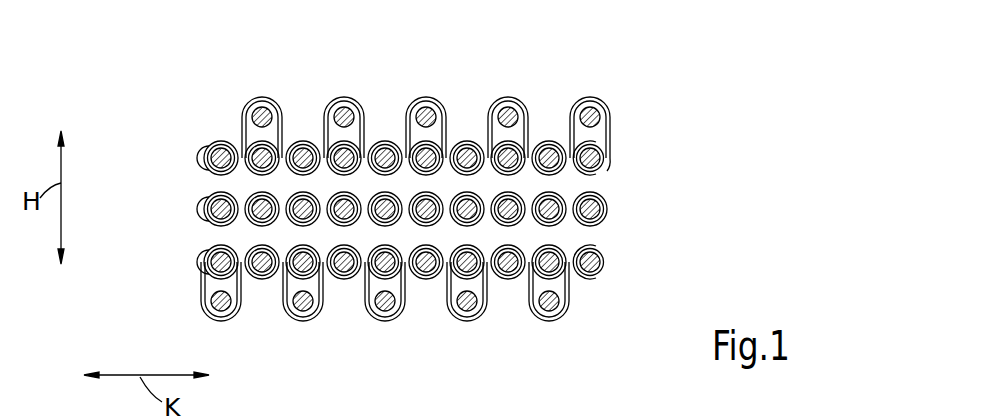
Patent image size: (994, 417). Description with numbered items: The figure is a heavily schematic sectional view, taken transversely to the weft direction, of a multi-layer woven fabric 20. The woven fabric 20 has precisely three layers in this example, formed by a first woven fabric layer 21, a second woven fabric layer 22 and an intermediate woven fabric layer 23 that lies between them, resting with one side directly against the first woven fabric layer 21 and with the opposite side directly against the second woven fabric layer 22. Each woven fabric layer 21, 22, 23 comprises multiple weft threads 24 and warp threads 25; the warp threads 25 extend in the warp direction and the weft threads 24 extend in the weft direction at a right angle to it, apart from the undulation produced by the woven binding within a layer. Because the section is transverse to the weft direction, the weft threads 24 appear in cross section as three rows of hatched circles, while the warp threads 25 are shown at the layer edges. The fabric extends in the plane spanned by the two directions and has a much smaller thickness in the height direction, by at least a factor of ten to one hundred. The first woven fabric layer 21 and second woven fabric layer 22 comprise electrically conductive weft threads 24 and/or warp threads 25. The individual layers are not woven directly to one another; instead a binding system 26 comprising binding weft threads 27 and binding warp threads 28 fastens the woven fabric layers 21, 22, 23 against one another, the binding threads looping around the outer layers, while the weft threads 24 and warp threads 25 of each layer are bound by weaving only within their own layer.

The woven fabric 20 is at (740, 105).
The first woven fabric layer 21 is at (636, 155).
The second woven fabric layer 22 is at (641, 267).
The intermediate woven fabric layer 23 is at (640, 207).
The weft threads 24 is at (402, 130).
The warp threads 25 is at (200, 170).
The binding system 26 is at (640, 93).
The binding weft threads 27 is at (248, 105).
The binding warp threads 28 is at (283, 114).